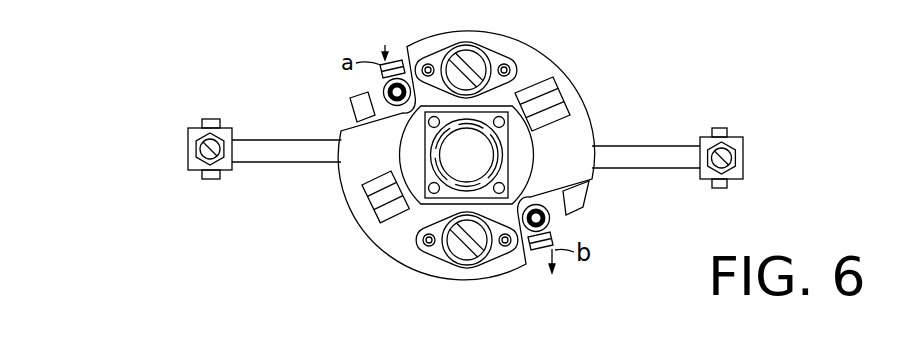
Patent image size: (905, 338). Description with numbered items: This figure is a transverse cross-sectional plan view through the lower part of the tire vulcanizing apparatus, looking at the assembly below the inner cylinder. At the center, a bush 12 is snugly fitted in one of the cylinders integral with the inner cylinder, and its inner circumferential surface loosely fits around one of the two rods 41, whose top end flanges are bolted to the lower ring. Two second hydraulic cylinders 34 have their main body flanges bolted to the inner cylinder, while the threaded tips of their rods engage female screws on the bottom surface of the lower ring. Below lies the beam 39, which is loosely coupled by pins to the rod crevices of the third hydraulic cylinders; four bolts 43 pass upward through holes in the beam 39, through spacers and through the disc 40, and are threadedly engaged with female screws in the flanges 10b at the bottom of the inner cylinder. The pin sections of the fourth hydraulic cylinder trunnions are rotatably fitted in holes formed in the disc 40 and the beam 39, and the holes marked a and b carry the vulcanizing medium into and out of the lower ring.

The flanges 10b is at (507, 57).
The bush 12 is at (481, 53).
The second hydraulic cylinders 34 is at (581, 107).
The beam 39 is at (672, 168).
The disc 40 is at (592, 184).
The rods 41 is at (443, 53).
The bolts 43 is at (414, 56).